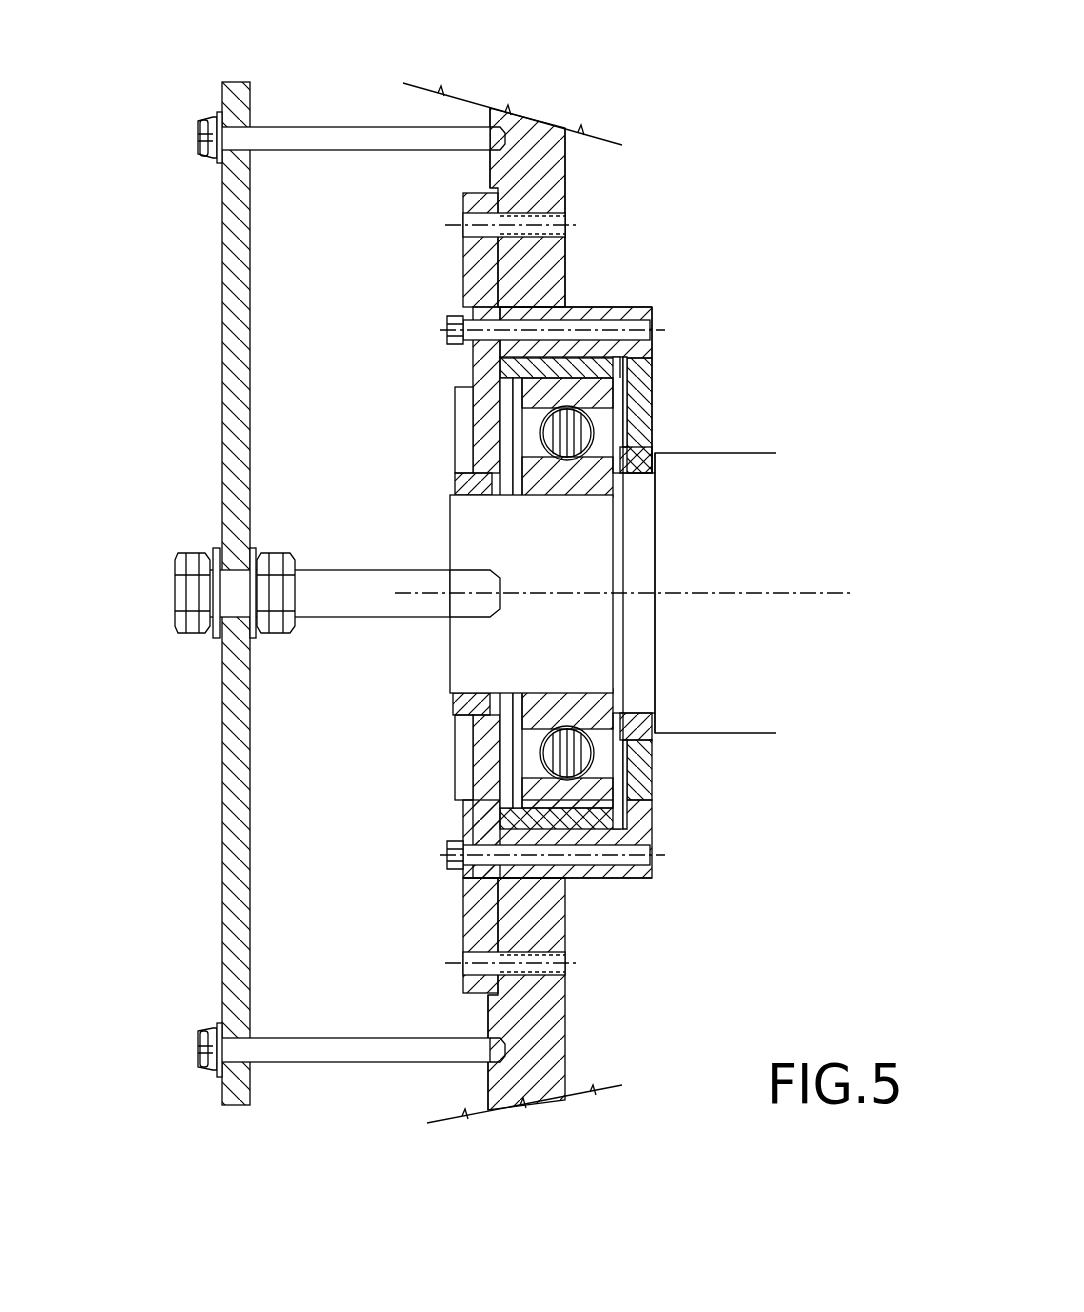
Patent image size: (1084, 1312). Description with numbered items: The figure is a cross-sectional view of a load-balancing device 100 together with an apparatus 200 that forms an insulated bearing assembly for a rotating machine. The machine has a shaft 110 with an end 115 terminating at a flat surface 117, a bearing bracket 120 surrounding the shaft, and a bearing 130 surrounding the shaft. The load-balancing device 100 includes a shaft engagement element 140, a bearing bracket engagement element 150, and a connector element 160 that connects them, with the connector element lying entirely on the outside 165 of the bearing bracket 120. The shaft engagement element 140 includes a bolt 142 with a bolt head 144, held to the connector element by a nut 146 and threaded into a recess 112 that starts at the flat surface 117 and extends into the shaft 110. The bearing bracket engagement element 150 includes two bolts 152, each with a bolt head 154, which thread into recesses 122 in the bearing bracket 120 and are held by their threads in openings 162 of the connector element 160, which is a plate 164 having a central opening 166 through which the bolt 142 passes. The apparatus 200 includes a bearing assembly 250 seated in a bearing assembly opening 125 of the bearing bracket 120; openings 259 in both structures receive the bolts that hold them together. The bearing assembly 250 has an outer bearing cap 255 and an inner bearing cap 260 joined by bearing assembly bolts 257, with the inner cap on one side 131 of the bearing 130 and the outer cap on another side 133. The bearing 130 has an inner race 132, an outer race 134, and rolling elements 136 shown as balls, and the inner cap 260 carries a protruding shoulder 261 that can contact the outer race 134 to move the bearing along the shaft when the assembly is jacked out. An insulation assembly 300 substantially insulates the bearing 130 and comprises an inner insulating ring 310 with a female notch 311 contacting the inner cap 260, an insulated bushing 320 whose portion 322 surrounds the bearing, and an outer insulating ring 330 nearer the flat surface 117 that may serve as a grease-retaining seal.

The load-balancing device 100 is at (140, 160).
The shaft 110 is at (770, 546).
The recess 112 is at (434, 664).
The end of shaft 115 is at (609, 641).
The flat surface 117 is at (450, 542).
The bearing bracket 120 is at (566, 152).
The recesses 122 is at (490, 160).
The bearing assembly opening 125 is at (543, 307).
The bearing 130 is at (640, 404).
The side of bearing 131 is at (625, 432).
The inner race 132 is at (584, 490).
The side of bearing 133 is at (515, 408).
The outer race 134 is at (645, 392).
The rolling elements 136 is at (565, 460).
The shaft engagement element 140 is at (284, 609).
The bolt 142 is at (386, 616).
The bolt head 144 is at (188, 627).
The nut 146 is at (276, 627).
The bearing bracket engagement element 150 is at (300, 606).
The bolts 152 is at (290, 127).
The bolt head 154 is at (206, 117).
The connector element 160 is at (190, 825).
The openings 162 is at (242, 155).
The plate 164 is at (225, 405).
The outside of bearing bracket 165 is at (410, 434).
The opening 166 is at (232, 628).
The apparatus 200 is at (616, 532).
The bearing assembly 250 is at (437, 275).
The outer bearing cap 255 is at (458, 362).
The bearing assembly bolts 257 is at (447, 320).
The openings 259 is at (523, 205).
The inner bearing cap 260 is at (652, 360).
The protruding shoulder 261 is at (652, 346).
The insulation assembly 300 is at (490, 753).
The inner insulating ring 310 is at (652, 722).
The female notch 311 is at (660, 447).
The insulated bushing 320 is at (590, 357).
The portion of insulated bushing 322 is at (595, 842).
The outer insulating ring 330 is at (453, 710).